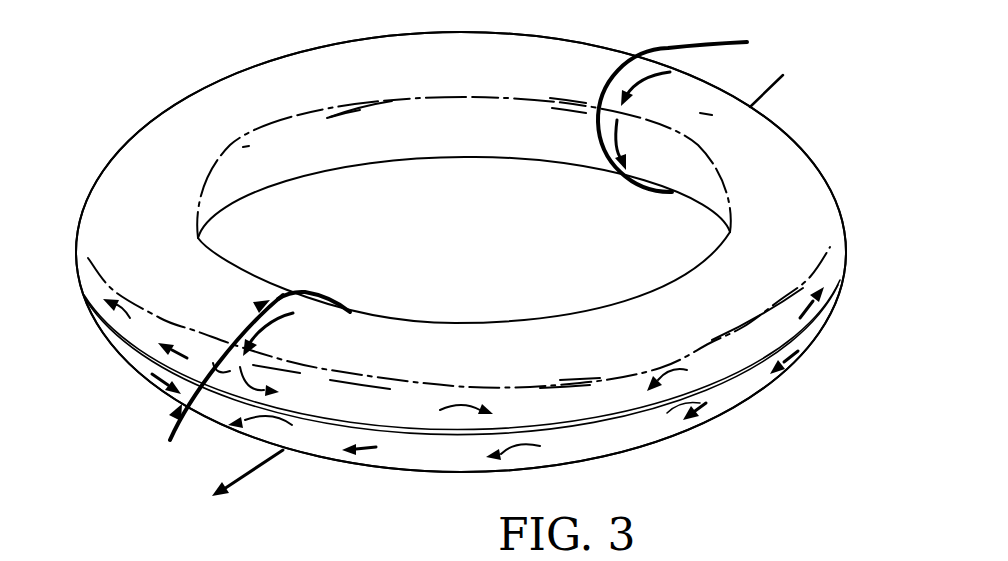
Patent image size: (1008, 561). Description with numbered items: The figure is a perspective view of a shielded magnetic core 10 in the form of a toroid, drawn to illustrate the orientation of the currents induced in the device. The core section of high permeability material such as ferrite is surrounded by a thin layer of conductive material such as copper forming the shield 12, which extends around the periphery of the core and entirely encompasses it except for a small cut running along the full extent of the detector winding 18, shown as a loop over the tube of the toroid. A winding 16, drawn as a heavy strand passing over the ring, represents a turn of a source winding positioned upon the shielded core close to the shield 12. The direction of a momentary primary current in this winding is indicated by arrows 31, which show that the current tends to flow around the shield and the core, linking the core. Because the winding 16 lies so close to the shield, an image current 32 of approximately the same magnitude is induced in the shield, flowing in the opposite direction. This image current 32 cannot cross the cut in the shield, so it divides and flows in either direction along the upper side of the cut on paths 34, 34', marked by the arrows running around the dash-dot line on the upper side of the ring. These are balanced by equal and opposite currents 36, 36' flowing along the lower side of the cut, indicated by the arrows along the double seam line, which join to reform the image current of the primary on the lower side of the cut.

The shielded magnetic core 10 is at (100, 424).
The shield 12 is at (770, 118).
The winding 16 is at (172, 432).
The detector winding 18 is at (718, 41).
The arrows 31 is at (266, 285).
The image current 32 is at (275, 323).
The path 34 is at (459, 336).
The path 34' is at (153, 302).
The current 36 is at (462, 372).
The current 36' is at (140, 375).